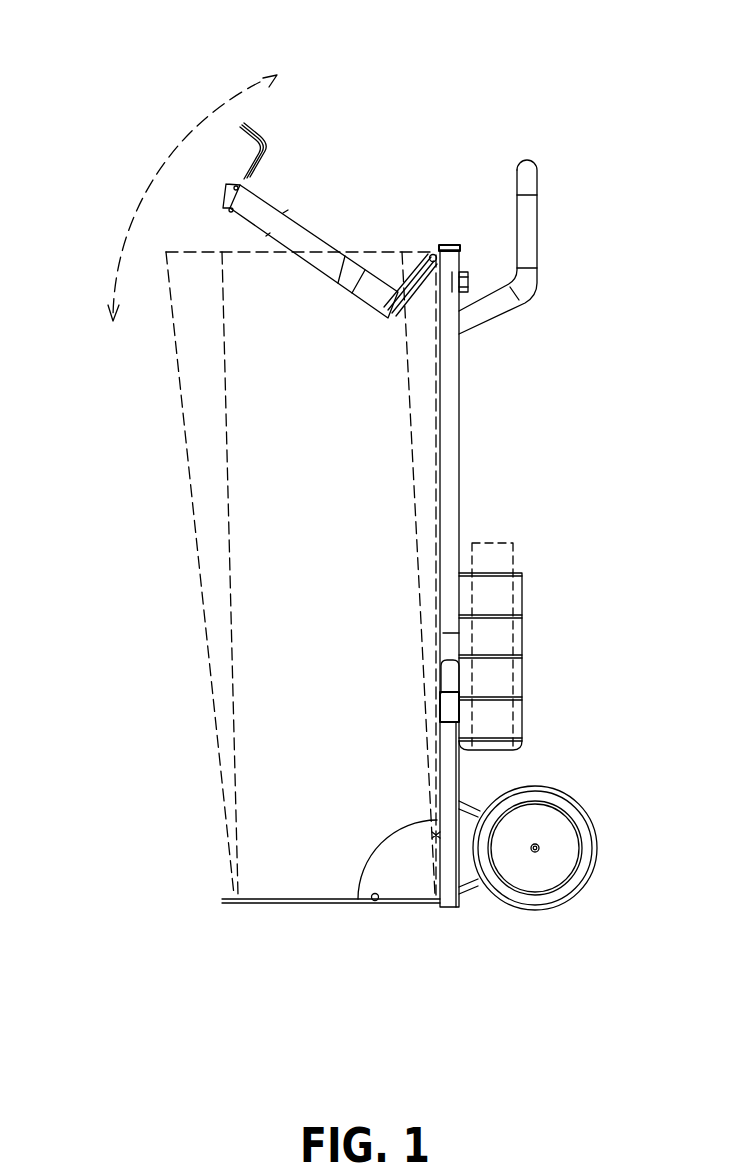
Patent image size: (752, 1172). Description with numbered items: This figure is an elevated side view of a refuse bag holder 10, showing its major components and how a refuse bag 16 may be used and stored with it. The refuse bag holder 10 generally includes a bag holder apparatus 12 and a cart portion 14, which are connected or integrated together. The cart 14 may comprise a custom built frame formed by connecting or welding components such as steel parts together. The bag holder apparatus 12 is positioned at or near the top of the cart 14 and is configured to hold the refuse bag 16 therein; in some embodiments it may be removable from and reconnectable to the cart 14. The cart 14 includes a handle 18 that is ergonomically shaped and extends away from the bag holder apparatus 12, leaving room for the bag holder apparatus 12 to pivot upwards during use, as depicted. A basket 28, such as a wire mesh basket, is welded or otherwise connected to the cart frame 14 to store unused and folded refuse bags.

The refuse bag holder 10 is at (317, 113).
The bag holder apparatus 12 is at (277, 197).
The cart portion 14 is at (463, 427).
The refuse bag 16 is at (198, 537).
The handle 18 is at (537, 200).
The basket 28 is at (525, 630).